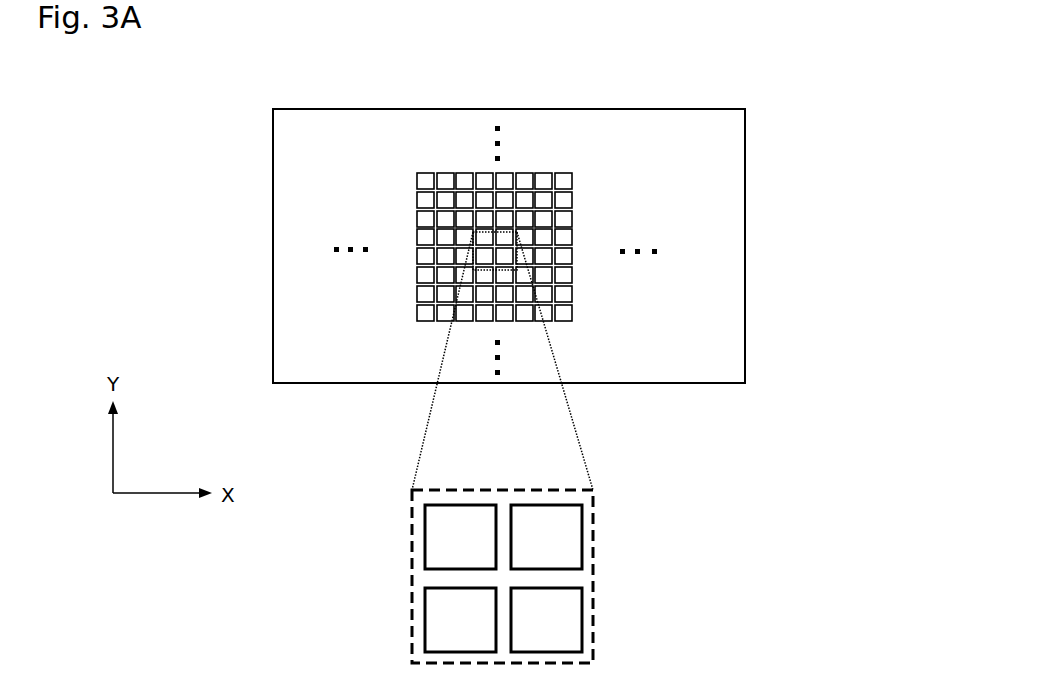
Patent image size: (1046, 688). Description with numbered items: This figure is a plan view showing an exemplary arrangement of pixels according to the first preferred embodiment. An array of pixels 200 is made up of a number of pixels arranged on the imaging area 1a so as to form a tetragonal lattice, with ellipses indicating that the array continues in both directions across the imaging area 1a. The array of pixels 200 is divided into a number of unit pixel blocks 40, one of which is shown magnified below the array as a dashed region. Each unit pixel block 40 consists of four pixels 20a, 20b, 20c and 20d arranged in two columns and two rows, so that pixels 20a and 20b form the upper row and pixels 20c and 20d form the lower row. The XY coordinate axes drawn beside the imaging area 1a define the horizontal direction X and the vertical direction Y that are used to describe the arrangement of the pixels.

The imaging area 1a is at (569, 246).
The array of pixels 200 is at (548, 245).
The unit pixel block 40 is at (562, 447).
The pixel 20a is at (404, 540).
The pixel 20b is at (615, 544).
The pixel 20c is at (404, 620).
The pixel 20d is at (615, 620).